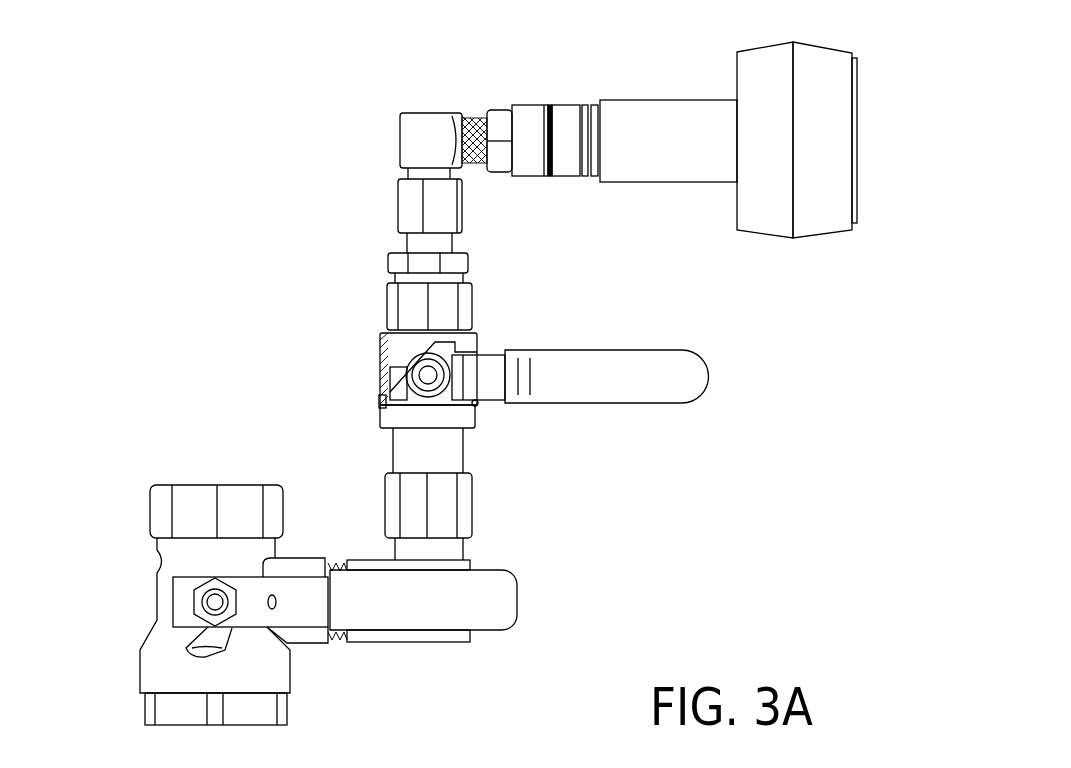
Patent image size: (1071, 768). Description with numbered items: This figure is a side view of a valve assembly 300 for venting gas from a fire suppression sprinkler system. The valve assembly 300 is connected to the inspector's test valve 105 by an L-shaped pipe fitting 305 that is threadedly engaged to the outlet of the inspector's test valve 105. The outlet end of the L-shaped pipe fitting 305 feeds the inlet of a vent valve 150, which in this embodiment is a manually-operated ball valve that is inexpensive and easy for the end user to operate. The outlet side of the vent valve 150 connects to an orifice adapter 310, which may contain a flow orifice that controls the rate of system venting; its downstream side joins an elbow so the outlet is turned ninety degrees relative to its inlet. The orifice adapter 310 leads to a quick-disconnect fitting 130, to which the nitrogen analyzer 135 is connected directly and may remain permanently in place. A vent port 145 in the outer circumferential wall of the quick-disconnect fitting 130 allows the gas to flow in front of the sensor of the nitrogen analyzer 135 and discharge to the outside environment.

The valve assembly 300 is at (319, 141).
The inspector's test valve 105 is at (157, 564).
The quick-disconnect fitting 130 is at (528, 102).
The nitrogen analyzer 135 is at (760, 233).
The vent port 145 is at (589, 174).
The vent valve 150 is at (380, 402).
The L-shaped pipe fitting 305 is at (487, 643).
The orifice adapter 310 is at (462, 215).